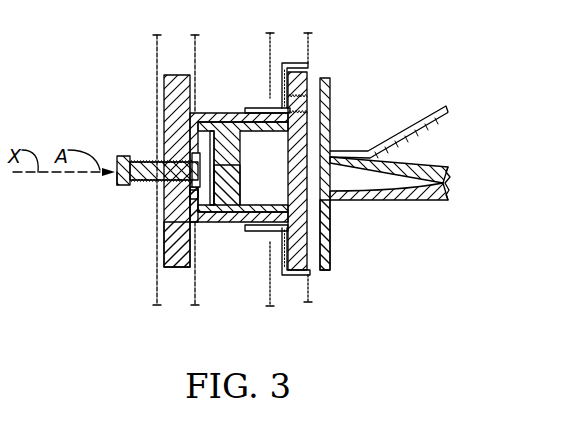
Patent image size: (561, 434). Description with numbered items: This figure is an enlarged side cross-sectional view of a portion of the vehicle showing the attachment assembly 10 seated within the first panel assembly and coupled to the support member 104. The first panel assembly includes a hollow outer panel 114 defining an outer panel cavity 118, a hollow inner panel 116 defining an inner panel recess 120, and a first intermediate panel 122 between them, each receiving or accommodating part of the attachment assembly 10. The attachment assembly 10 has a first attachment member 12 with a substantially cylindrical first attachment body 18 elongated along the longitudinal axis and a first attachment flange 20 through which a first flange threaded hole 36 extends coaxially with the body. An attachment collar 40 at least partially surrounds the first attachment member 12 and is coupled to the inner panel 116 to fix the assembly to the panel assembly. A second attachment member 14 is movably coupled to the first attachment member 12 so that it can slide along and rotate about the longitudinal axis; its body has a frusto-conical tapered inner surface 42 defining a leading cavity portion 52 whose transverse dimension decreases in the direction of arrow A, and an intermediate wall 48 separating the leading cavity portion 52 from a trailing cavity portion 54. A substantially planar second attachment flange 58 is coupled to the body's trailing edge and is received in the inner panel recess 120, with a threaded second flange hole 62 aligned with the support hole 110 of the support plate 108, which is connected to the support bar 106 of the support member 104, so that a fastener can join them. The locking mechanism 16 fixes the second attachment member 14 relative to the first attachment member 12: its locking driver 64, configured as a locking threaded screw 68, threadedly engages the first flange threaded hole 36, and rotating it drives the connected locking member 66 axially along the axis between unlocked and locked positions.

The attachment assembly 10 is at (262, 100).
The first attachment member 12 is at (164, 92).
The second attachment member 14 is at (283, 66).
The locking mechanism 16 is at (110, 191).
The first attachment body 18 is at (210, 112).
The first attachment flange 20 is at (177, 238).
The first flange threaded hole 36 is at (178, 162).
The attachment collar 40 is at (265, 233).
The tapered inner surface 42 is at (200, 225).
The intermediate wall 48 is at (238, 175).
The leading cavity portion 52 is at (223, 141).
The trailing cavity portion 54 is at (275, 225).
The second attachment flange 58 is at (307, 258).
The second flange hole 62 is at (305, 113).
The locking driver 64 is at (124, 155).
The locking member 66 is at (200, 196).
The locking threaded screw 68 is at (117, 180).
The support member 104 is at (422, 104).
The support bar 106 is at (403, 200).
The support plate 108 is at (331, 228).
The support hole 110 is at (329, 100).
The outer panel 114 is at (157, 280).
The inner panel 116 is at (310, 296).
The outer panel cavity 118 is at (160, 293).
The inner panel recess 120 is at (309, 66).
The first intermediate panel 122 is at (195, 70).